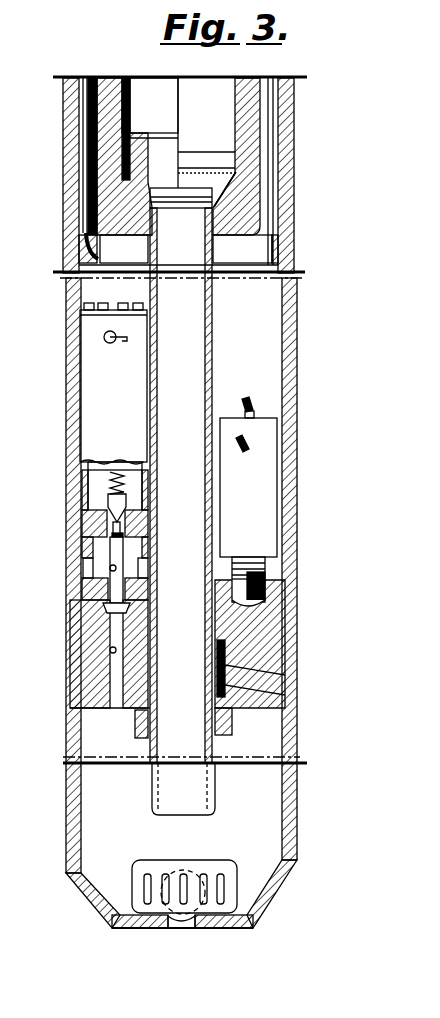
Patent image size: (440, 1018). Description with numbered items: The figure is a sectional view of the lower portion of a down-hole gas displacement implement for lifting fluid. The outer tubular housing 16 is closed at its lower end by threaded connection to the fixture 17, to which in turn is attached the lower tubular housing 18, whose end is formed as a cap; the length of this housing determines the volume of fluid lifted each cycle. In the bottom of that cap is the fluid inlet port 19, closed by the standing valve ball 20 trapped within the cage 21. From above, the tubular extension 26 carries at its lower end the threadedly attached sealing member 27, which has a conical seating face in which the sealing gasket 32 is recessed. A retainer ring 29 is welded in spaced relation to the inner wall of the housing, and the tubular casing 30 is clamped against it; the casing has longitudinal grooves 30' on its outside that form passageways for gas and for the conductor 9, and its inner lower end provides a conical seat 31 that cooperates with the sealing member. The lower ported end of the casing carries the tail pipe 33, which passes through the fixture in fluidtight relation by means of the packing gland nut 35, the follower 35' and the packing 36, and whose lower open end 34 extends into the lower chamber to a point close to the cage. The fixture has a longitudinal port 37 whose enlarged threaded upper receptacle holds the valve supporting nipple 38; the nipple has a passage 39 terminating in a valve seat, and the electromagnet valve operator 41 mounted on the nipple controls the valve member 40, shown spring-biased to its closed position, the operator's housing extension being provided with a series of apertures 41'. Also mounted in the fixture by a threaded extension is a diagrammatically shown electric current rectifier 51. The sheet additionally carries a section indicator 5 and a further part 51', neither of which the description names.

The section line 5 is at (333, 295).
The conductor 9 is at (80, 240).
The tubular housing 16 is at (296, 353).
The fixture 17 is at (283, 643).
The tubular housing 18 is at (296, 761).
The fluid inlet port 19 is at (174, 929).
The standing valve ball 20 is at (200, 930).
The cage 21 is at (228, 868).
The tubular extension 26 is at (129, 97).
The sealing member 27 is at (138, 136).
The retainer ring 29 is at (262, 247).
The tubular casing 30 is at (277, 156).
The longitudinal grooves 30' is at (307, 171).
The conical seat 31 is at (228, 191).
The sealing gasket 32 is at (218, 171).
The tail pipe 33 is at (215, 361).
The lower open end 34 is at (178, 816).
The packing gland nut 35 is at (244, 723).
The follower 35' is at (286, 699).
The packing 36 is at (285, 675).
The longitudinal port 37 is at (110, 657).
The valve supporting nipple 38 is at (118, 568).
The passage 39 is at (110, 568).
The valve member 40 is at (110, 507).
The electromagnet valve operator 41 is at (84, 386).
The apertures 41' is at (138, 490).
The electric current rectifier 51 is at (281, 487).
The plug 51' is at (227, 374).